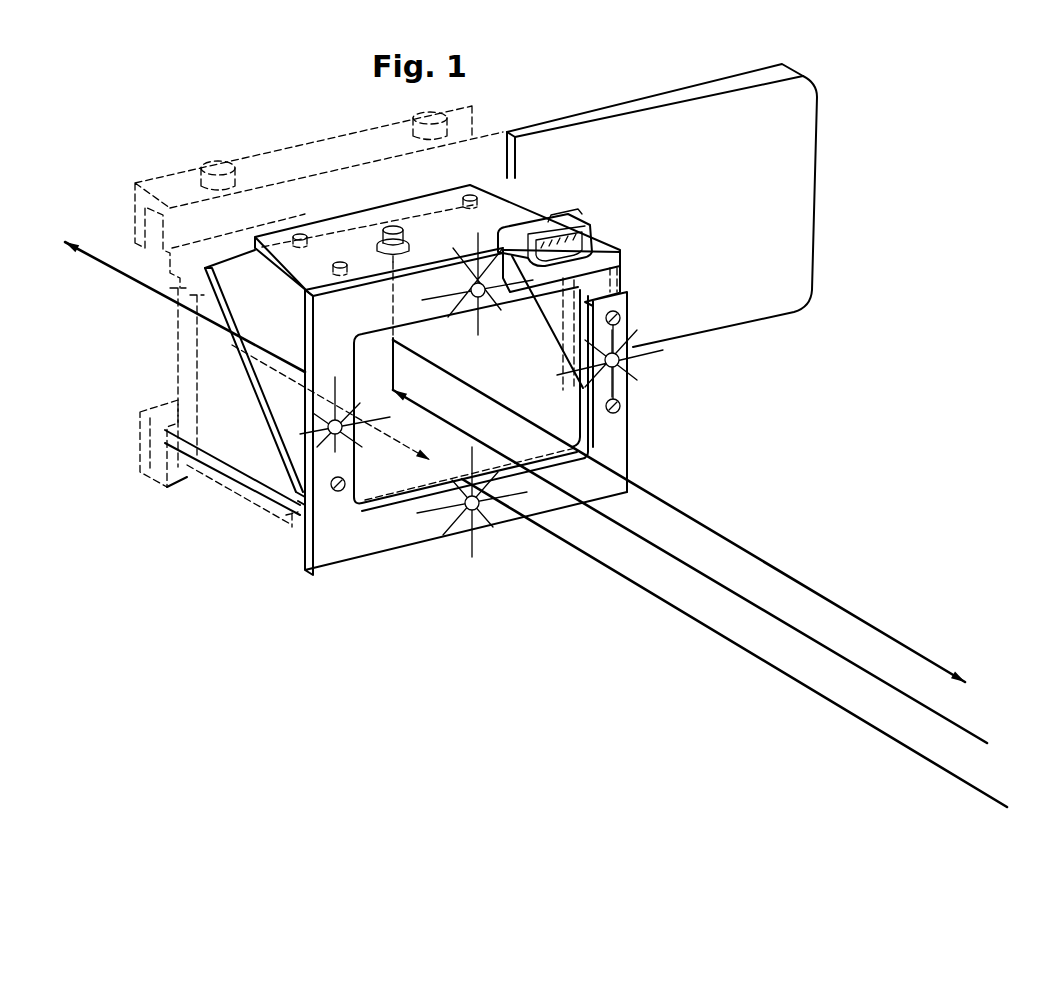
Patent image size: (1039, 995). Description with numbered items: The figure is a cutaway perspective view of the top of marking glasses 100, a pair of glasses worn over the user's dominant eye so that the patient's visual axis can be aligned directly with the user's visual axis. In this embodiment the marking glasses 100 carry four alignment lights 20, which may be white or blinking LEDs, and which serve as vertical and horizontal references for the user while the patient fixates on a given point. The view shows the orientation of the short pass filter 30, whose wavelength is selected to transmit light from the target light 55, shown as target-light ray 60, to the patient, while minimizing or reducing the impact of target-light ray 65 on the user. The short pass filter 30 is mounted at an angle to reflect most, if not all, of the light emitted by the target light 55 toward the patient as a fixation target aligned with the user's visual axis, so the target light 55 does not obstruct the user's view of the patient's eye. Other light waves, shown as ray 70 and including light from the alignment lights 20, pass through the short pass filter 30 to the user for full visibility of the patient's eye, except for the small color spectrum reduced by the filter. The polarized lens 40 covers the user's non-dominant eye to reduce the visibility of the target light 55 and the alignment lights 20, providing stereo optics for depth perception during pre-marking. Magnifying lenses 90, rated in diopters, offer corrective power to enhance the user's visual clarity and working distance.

The marking glasses 100 is at (748, 61).
The alignment lights 20 is at (472, 282).
The short pass filter 30 is at (243, 372).
The polarized lens 40 is at (620, 128).
The target light 55 is at (385, 235).
The target-light ray 60 is at (652, 493).
The target-light ray 65 is at (958, 723).
The ray 70 is at (627, 582).
The magnifying lenses 90 is at (185, 307).